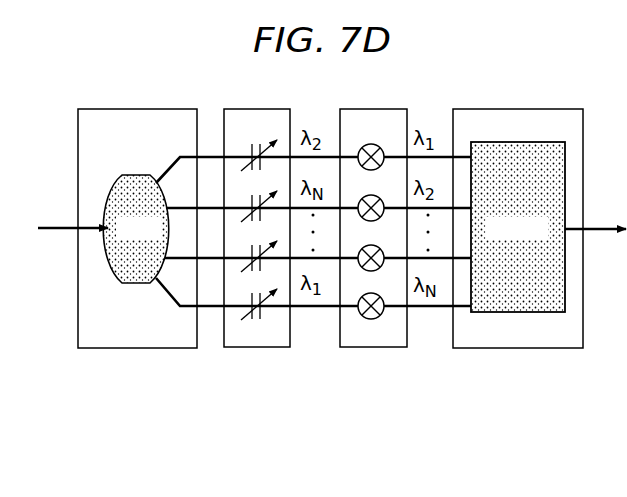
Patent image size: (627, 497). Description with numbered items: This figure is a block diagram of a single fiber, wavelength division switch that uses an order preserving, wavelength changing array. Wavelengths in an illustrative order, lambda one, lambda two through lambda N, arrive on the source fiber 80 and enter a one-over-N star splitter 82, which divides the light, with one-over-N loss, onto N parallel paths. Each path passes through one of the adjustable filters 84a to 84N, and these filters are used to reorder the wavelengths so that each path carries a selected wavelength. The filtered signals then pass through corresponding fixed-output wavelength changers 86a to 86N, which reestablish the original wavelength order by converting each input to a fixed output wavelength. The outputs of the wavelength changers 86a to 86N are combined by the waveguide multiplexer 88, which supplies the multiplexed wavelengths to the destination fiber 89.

The source fiber 80 is at (53, 226).
The 1/N star splitter 82 is at (120, 108).
The adjustable filter 84a is at (262, 152).
The adjustable filter 84N is at (262, 318).
The fixed-output wavelength changer 86a is at (371, 144).
The fixed-output wavelength changer 86N is at (374, 319).
The waveguide multiplexer 88 is at (530, 108).
The destination fiber 89 is at (599, 214).